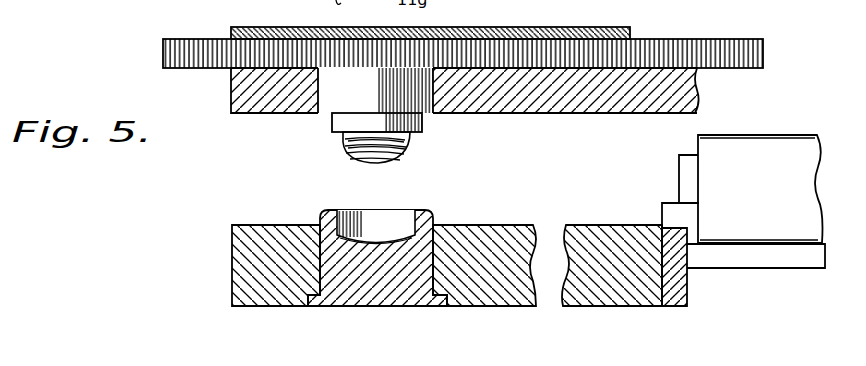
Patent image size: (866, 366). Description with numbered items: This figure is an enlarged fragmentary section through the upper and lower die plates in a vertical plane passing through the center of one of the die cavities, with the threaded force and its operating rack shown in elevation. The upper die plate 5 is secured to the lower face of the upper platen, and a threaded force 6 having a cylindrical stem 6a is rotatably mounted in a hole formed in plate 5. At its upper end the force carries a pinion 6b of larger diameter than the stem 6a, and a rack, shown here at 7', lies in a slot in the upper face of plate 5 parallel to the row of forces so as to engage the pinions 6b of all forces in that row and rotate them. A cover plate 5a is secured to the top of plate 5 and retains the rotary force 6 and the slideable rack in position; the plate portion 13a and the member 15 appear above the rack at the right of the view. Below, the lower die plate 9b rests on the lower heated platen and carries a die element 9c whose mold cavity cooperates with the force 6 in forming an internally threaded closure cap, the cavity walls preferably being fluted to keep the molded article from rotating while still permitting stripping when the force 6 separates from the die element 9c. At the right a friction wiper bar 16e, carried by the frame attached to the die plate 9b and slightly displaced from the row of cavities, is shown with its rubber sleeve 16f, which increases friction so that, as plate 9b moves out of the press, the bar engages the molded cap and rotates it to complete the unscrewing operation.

The upper die plate 5 is at (251, 108).
The cover plate 5a is at (237, 28).
The threaded force 6 is at (344, 145).
The cylindrical stem 6a is at (330, 104).
The pinion 6b is at (366, 50).
The knurled band 7' is at (446, 53).
The lower die plate 9b is at (247, 228).
The die element 9c is at (330, 212).
The plate 13a is at (612, 8).
The pipe 15 is at (679, 8).
The friction wiper bar 16e is at (684, 156).
The rubber sleeve 16f is at (772, 135).